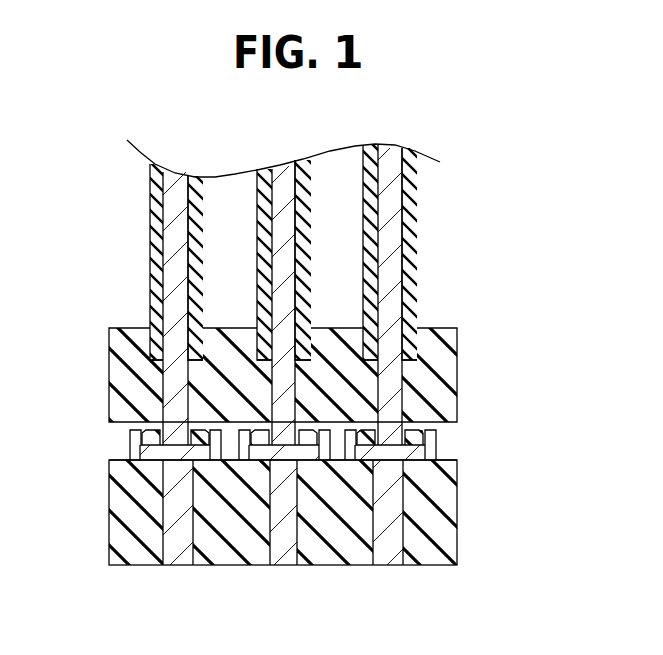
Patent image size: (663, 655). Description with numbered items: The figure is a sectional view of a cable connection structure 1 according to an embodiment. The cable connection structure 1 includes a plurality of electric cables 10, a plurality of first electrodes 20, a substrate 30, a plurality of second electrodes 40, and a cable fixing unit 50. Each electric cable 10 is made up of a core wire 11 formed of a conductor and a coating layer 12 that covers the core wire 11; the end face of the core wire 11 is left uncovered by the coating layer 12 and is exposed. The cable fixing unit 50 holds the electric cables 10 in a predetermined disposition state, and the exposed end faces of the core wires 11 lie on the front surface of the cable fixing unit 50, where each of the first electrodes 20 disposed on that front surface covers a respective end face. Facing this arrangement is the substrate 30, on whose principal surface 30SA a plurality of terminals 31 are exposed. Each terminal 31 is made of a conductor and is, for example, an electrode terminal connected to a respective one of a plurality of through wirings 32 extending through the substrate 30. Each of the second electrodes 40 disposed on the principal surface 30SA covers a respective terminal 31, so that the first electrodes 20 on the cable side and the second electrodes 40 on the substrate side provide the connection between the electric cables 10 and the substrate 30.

The cable connection structure 1 is at (522, 222).
The electric cable 10 is at (331, 350).
The core wire 11 is at (164, 305).
The coating layer 12 is at (150, 257).
The first electrode 20 is at (135, 430).
The substrate 30 is at (331, 361).
The principal surface 30SA is at (452, 452).
The terminal 31 is at (152, 464).
The through wiring 32 is at (185, 566).
The second electrode 40 is at (135, 447).
The cable fixing unit 50 is at (109, 370).